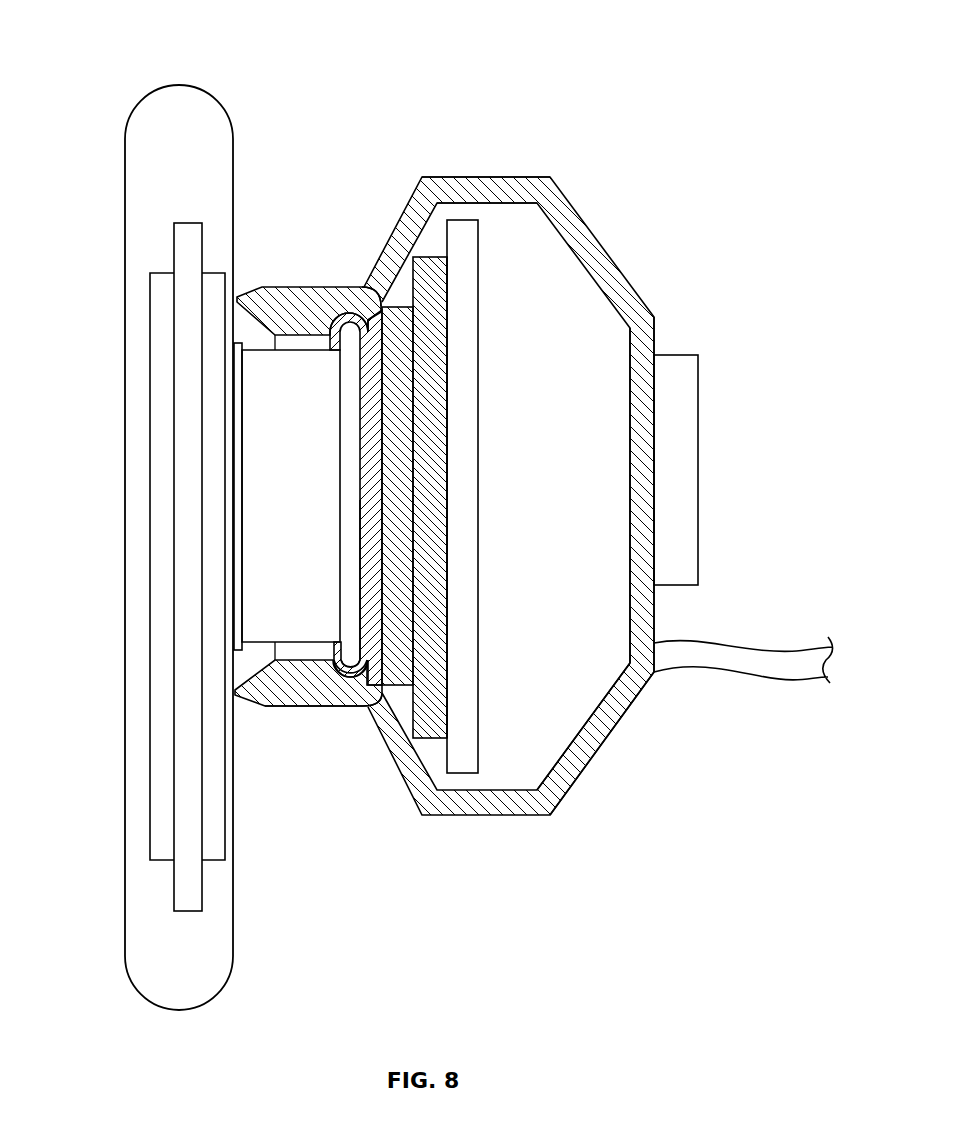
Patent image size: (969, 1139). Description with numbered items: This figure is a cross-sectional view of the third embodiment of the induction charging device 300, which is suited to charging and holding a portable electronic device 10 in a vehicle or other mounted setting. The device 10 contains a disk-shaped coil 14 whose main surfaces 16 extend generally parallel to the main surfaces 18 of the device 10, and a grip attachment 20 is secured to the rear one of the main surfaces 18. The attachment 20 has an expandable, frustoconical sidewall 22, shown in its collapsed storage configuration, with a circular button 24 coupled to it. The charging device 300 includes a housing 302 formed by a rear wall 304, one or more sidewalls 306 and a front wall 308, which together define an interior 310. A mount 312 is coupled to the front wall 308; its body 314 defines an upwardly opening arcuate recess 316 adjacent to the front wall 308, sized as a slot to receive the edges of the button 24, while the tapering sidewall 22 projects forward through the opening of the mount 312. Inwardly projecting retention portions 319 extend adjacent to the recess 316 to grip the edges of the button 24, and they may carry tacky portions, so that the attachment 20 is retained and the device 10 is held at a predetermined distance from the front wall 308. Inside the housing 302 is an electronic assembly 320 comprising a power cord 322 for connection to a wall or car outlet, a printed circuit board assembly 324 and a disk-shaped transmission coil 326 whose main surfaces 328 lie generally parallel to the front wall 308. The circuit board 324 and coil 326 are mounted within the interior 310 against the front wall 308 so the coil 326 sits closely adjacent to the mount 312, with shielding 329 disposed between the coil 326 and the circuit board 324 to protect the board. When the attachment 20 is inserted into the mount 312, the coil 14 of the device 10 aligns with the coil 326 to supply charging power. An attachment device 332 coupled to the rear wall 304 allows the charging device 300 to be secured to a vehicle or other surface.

The portable electronic device 10 is at (182, 86).
The coil 14 is at (185, 455).
The main surfaces 16 is at (240, 378).
The main surfaces 18 is at (150, 280).
The grip attachment 20 is at (268, 540).
The expandable sidewall 22 is at (268, 605).
The button 24 is at (362, 520).
The induction charging device 300 is at (664, 98).
The housing 302 is at (466, 177).
The rear wall 304 is at (655, 325).
The sidewalls 306 is at (612, 735).
The front wall 308 is at (356, 289).
The interior 310 is at (567, 302).
The mount 312 is at (327, 706).
The body 314 is at (277, 290).
The arcuate recess 316 is at (330, 688).
The retention portions 319 is at (307, 650).
The electronic assembly 320 is at (452, 538).
The power cord 322 is at (747, 645).
The printed circuit board assembly 324 is at (478, 395).
The transmission coil 326 is at (380, 450).
The main surfaces 328 is at (345, 600).
The shielding 329 is at (430, 512).
The attachment device 332 is at (700, 490).